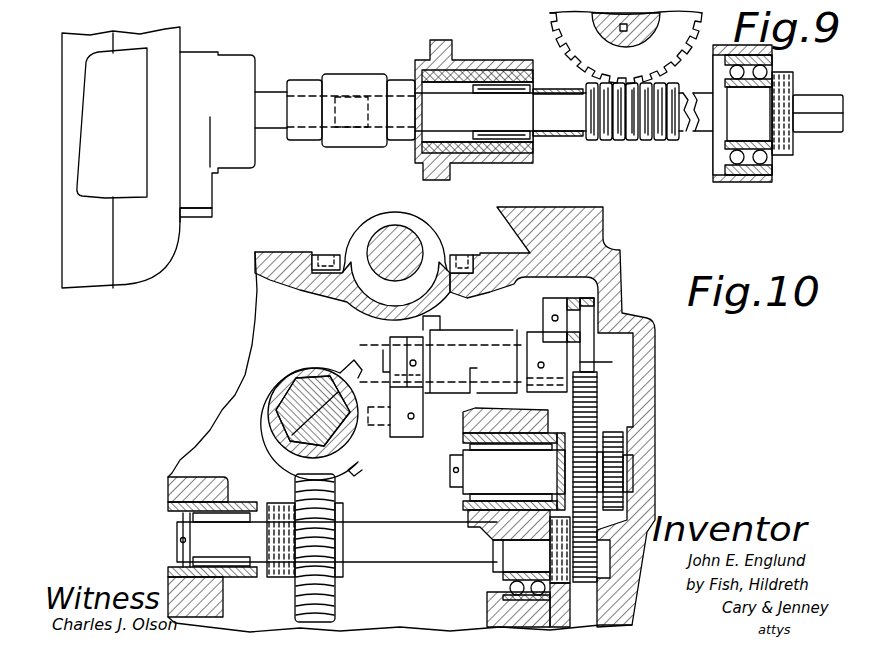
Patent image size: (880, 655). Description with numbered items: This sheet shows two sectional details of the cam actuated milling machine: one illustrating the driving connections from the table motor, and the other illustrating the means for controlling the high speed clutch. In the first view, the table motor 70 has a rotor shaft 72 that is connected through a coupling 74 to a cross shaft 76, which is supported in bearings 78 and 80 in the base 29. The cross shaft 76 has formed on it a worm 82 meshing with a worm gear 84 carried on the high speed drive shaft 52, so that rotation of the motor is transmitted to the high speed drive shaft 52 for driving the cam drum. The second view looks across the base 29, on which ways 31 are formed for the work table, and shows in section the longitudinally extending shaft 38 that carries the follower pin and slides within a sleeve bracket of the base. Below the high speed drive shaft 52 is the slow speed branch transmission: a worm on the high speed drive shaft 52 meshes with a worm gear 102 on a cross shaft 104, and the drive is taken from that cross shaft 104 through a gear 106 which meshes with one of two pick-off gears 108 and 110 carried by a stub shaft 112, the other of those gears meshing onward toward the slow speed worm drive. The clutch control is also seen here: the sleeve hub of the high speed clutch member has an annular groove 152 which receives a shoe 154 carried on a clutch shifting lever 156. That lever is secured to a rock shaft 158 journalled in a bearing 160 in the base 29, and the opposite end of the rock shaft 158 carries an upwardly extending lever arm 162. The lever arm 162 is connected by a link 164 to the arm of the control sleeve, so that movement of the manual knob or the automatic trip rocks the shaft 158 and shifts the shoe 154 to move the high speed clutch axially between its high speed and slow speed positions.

In FIG. 9, the base 29 is at (422, 160).
In FIG. 10, the base 29 is at (603, 238).
In FIG. 10, the ways 31 is at (512, 229).
In FIG. 10, the shaft 38 is at (375, 243).
In FIG. 9, the high speed drive shaft 52 is at (613, 37).
In FIG. 10, the high speed drive shaft 52 is at (282, 438).
In FIG. 9, the table motor 70 is at (162, 83).
In FIG. 9, the rotor shaft 72 is at (266, 105).
In FIG. 9, the coupling 74 is at (346, 80).
In FIG. 9, the cross shaft 76 is at (440, 103).
In FIG. 9, the bearing 78 is at (482, 90).
In FIG. 9, the bearing 80 is at (775, 68).
In FIG. 9, the worm 82 is at (615, 142).
In FIG. 9, the worm gear 84 is at (548, 34).
In FIG. 10, the worm gear 102 is at (325, 587).
In FIG. 10, the cross shaft 104 is at (447, 542).
In FIG. 10, the gear 106 is at (586, 583).
In FIG. 10, the pick-off gear 108 is at (590, 398).
In FIG. 10, the pick-off gear 110 is at (615, 465).
In FIG. 10, the stub shaft 112 is at (483, 470).
In FIG. 10, the annular groove 152 is at (282, 378).
In FIG. 10, the shoe 154 is at (347, 365).
In FIG. 10, the clutch shifting lever 156 is at (404, 434).
In FIG. 10, the rock shaft 158 is at (385, 352).
In FIG. 10, the bearing 160 is at (501, 333).
In FIG. 10, the lever arm 162 is at (587, 363).
In FIG. 10, the link 164 is at (573, 292).